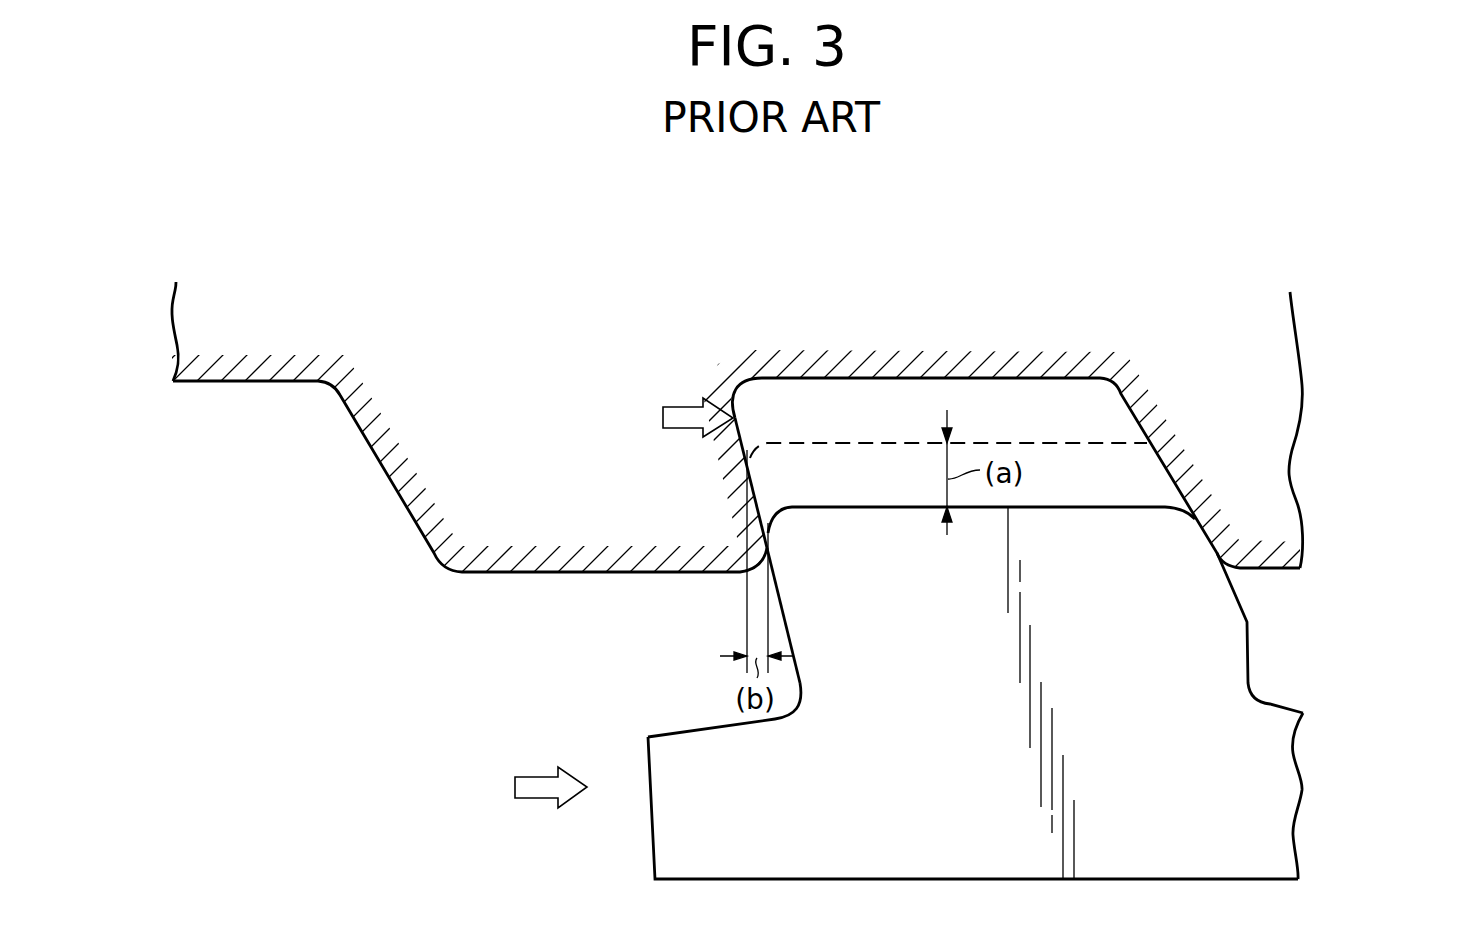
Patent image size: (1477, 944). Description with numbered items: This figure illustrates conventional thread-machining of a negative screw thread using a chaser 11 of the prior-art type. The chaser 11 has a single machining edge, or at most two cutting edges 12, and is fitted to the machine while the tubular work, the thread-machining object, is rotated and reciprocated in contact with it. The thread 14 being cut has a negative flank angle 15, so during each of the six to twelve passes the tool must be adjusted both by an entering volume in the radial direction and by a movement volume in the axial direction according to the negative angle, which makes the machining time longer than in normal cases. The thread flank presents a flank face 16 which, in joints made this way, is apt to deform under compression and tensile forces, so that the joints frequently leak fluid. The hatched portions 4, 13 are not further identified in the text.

The upper die 4 is at (738, 411).
The upper die (punch) 13 is at (1002, 360).
The upper die flange portion 14 is at (538, 527).
The die side wall 15 is at (745, 462).
The die shoulder corner 16 is at (733, 418).
The workpiece 12 is at (1213, 635).
The lower die 11 is at (1270, 802).